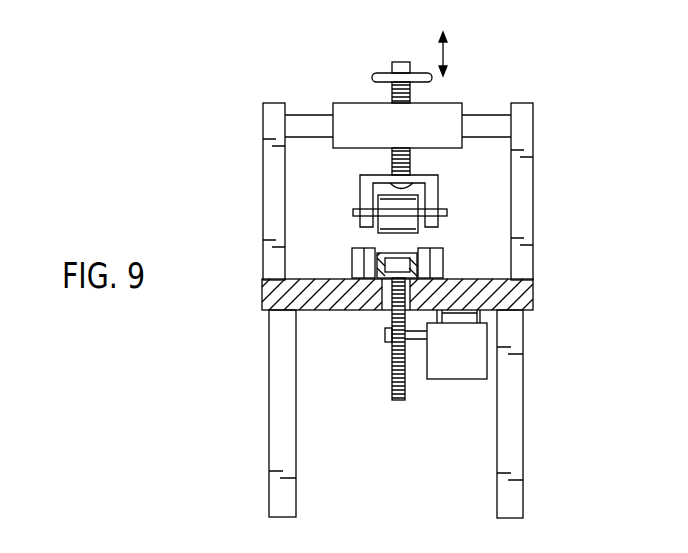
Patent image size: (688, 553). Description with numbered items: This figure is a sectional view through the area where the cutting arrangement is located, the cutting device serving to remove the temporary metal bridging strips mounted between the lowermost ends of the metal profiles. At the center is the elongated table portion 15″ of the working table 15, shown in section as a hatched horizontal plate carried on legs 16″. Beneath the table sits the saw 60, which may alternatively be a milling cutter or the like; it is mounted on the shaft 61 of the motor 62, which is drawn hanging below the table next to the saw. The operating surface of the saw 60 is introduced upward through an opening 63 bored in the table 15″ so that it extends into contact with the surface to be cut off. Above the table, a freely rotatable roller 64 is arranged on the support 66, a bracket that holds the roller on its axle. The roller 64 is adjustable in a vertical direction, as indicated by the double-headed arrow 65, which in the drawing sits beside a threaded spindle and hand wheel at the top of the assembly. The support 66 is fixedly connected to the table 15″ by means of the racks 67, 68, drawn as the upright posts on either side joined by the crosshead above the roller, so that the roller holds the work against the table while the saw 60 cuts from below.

The working table 15 is at (515, 303).
The legs 16 is at (513, 453).
The saw 60 is at (395, 401).
The shaft 61 is at (422, 345).
The motor 62 is at (472, 360).
The opening 63 is at (388, 298).
The freely rotatable roller 64 is at (408, 229).
The arrow 65 is at (447, 53).
The support 66 is at (433, 195).
The rack 67 is at (490, 118).
The rack 68 is at (272, 203).